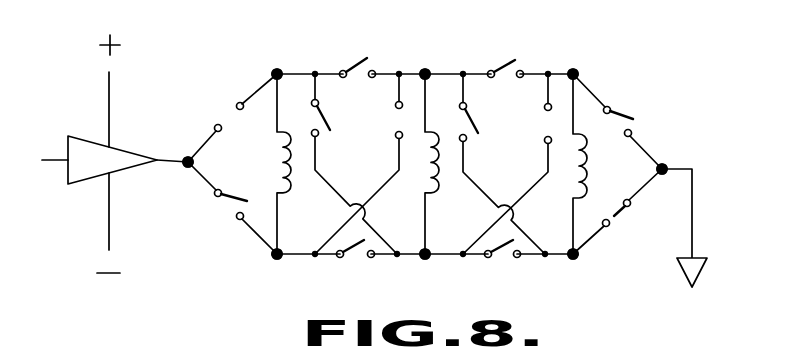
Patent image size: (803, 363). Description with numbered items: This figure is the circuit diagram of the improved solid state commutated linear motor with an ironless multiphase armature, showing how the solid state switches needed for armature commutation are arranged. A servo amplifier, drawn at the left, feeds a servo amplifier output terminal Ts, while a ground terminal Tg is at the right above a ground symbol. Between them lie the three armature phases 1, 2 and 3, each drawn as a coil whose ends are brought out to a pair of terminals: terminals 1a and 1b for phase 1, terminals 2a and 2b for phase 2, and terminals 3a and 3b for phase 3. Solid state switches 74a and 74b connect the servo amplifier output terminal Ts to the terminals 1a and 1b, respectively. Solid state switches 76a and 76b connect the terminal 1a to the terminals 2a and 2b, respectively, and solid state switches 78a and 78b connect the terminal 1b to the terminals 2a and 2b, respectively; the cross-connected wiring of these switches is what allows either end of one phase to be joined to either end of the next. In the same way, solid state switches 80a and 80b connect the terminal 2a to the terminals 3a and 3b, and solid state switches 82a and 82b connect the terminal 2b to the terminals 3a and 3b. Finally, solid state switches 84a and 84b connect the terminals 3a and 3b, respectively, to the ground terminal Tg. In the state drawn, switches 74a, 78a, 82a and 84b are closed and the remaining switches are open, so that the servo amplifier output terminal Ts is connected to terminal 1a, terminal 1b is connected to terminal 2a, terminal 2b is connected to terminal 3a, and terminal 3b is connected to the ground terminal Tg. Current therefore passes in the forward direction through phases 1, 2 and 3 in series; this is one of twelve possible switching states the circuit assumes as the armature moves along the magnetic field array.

The servo amplifier output terminal Ts is at (187, 158).
The ground terminal Tg is at (665, 166).
The terminal 1a is at (277, 69).
The terminal 1b is at (272, 257).
The terminal 2a is at (425, 69).
The terminal 2b is at (425, 260).
The terminal 3a is at (576, 71).
The terminal 3b is at (575, 258).
The phase 1 is at (288, 195).
The phase 2 is at (430, 196).
The phase 3 is at (591, 177).
The solid state switch 74a is at (218, 123).
The solid state switch 74b is at (229, 203).
The solid state switch 76a is at (361, 57).
The solid state switch 76b is at (320, 105).
The solid state switch 78a is at (397, 121).
The solid state switch 78b is at (359, 250).
The solid state switch 80a is at (509, 62).
The solid state switch 80b is at (468, 107).
The solid state switch 82a is at (547, 117).
The solid state switch 82b is at (509, 258).
The solid state switch 84a is at (627, 113).
The solid state switch 84b is at (618, 214).